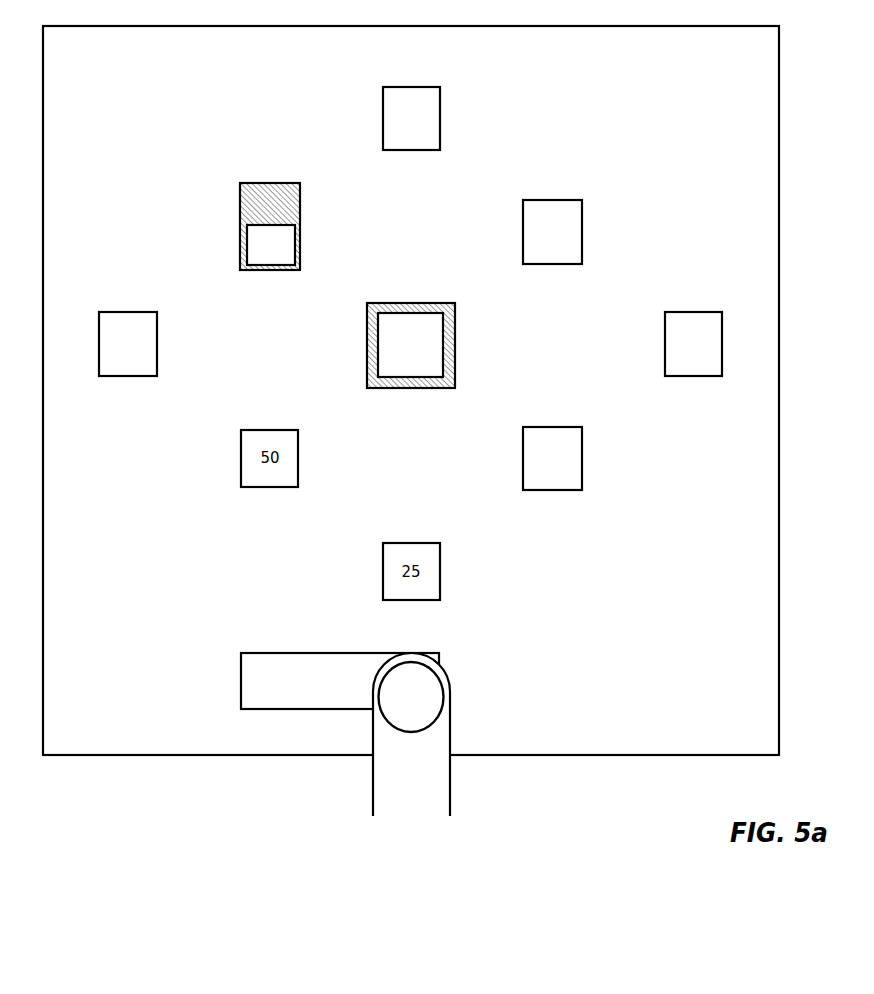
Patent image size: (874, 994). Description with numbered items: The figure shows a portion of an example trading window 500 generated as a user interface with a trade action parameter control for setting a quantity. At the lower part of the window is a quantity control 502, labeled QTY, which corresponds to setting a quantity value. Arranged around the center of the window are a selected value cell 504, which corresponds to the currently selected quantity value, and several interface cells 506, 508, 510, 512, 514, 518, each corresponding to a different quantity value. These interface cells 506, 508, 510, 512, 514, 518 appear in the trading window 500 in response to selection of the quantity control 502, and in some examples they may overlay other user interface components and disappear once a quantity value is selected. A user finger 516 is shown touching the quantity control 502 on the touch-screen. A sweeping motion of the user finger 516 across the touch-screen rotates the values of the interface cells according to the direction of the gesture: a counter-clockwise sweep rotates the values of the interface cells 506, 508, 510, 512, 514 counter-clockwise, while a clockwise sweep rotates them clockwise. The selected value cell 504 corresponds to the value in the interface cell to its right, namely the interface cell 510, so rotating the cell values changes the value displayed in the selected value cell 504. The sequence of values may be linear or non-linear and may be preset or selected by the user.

The trading window 500 is at (442, 390).
The quantity (QTY) control 502 is at (306, 691).
The selected value cell 504 is at (397, 363).
The interface cell 506 is at (397, 138).
The interface cell 508 is at (538, 250).
The interface cell 510 is at (679, 363).
The interface cell 512 is at (538, 478).
The interface cell 514 is at (114, 363).
The user finger 516 is at (443, 734).
The interface cell 518 is at (256, 253).